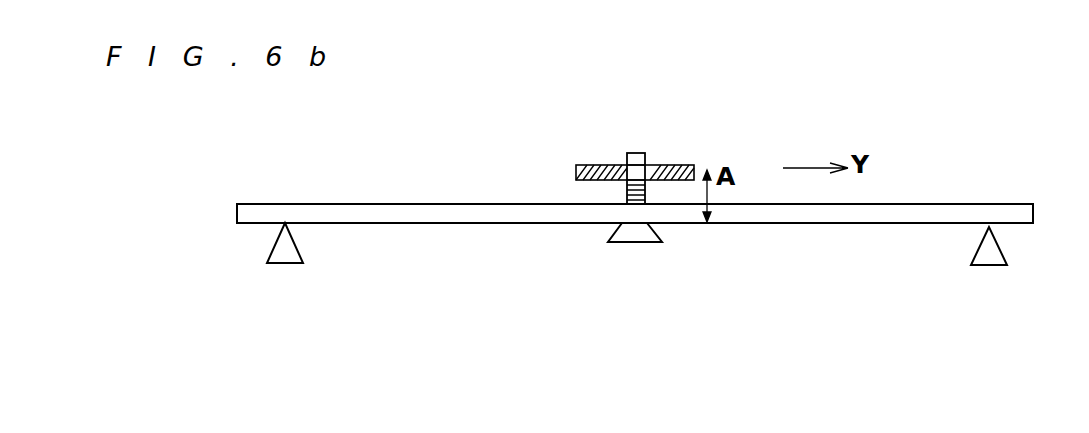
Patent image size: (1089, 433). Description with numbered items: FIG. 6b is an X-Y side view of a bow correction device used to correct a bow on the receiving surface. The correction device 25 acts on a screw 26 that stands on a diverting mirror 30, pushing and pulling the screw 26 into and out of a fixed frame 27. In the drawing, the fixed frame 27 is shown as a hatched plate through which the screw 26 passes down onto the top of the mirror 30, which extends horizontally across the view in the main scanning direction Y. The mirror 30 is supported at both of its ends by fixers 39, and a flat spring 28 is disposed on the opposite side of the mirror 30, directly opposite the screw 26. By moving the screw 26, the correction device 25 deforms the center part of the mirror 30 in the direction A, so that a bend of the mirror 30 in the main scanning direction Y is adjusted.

The correction device 25 is at (639, 143).
The screw 26 is at (636, 153).
The fixed frame 27 is at (680, 165).
The flat spring 28 is at (635, 243).
The diverting mirror 30 is at (960, 204).
The fixers 39 is at (288, 265).